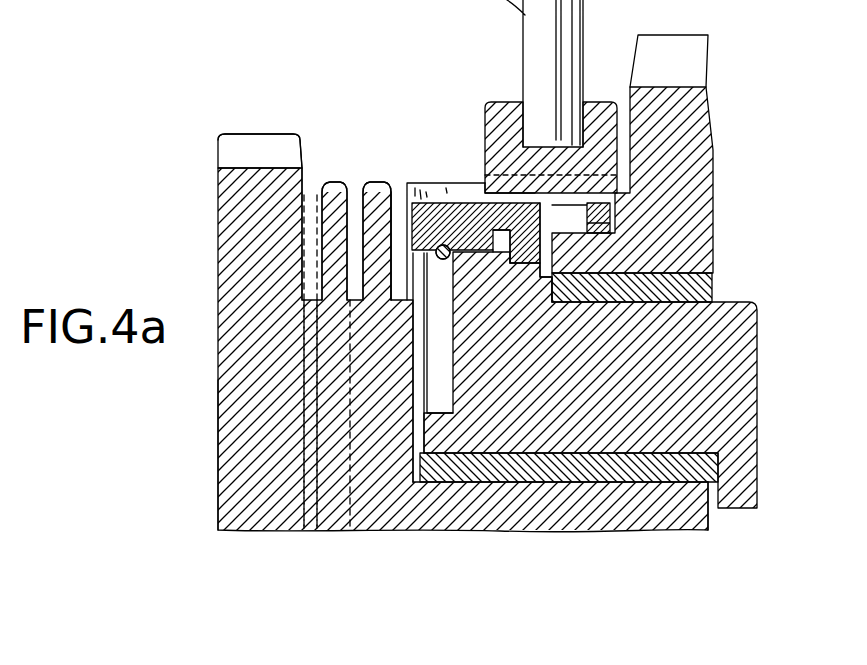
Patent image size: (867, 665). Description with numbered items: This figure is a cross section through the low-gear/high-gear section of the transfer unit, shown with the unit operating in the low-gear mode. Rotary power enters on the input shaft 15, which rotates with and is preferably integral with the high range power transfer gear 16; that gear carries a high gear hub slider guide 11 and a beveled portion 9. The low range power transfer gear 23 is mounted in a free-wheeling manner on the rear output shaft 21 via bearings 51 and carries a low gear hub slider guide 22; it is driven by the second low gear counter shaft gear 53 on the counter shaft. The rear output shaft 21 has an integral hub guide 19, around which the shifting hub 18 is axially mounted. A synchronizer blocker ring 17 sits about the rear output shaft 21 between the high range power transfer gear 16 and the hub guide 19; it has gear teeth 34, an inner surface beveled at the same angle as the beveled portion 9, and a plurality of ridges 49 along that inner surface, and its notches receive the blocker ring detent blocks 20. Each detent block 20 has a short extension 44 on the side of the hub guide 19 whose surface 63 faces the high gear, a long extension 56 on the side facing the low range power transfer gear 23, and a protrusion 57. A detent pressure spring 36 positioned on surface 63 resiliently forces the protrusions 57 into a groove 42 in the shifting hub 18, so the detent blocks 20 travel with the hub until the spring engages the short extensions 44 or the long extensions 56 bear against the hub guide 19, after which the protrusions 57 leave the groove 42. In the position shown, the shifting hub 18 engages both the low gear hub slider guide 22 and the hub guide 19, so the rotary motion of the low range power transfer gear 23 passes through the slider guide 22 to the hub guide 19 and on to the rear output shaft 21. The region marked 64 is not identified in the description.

The beveled portion 9 is at (383, 308).
The high gear hub slider guide 11 is at (337, 186).
The input shaft 15 is at (577, 515).
The high range power transfer gear 16 is at (260, 178).
The synchronizer blocker ring 17 is at (345, 220).
The shifting hub 18 is at (500, 100).
The hub guide 19 is at (437, 183).
The blocker ring detent block 20 is at (412, 235).
The rear output shaft 21 is at (713, 348).
The low gear hub slider guide 22 is at (607, 215).
The low range power transfer gear 23 is at (712, 108).
The gear teeth 34 is at (376, 186).
The detent pressure spring 36 is at (448, 259).
The groove 42 is at (535, 197).
The short extension 44 is at (414, 322).
The ridges 49 is at (388, 306).
The bearings 51 is at (710, 290).
The second low gear counter shaft gear 53 is at (432, 73).
The long extension 56 is at (505, 262).
The protrusion 57 is at (478, 192).
The surface 63 is at (403, 382).
The clearance 64 is at (487, 258).